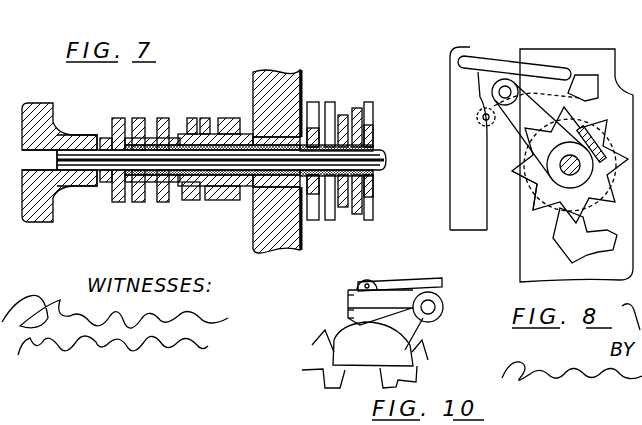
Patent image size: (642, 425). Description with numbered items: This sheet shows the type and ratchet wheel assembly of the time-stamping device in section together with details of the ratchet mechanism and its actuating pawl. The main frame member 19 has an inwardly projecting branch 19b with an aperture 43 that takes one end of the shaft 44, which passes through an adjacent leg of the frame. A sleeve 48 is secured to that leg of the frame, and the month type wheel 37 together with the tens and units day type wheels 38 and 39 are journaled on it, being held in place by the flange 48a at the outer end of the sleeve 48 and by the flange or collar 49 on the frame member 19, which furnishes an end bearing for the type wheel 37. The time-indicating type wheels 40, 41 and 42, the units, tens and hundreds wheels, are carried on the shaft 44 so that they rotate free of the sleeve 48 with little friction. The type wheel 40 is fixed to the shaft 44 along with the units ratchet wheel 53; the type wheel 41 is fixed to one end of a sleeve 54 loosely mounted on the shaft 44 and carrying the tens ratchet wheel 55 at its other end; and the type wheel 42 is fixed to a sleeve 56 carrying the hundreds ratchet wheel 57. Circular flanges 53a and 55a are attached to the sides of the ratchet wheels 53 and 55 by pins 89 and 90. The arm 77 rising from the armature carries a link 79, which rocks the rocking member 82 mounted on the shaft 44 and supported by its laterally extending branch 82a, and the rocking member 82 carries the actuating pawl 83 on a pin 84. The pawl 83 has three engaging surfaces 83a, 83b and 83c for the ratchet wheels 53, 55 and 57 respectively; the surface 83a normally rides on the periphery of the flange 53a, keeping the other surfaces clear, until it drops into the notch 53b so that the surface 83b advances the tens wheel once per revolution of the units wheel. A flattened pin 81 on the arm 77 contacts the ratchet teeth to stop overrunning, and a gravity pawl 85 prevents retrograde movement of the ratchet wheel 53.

In FIG. 7, the frame member 19 is at (44, 110).
In FIG. 8, the frame member 19 is at (576, 165).
In FIG. 7, the inwardly projecting branch 19b is at (78, 145).
In FIG. 7, the type wheel 37 is at (232, 118).
In FIG. 7, the type wheel 38 is at (204, 118).
In FIG. 7, the type wheel 39 is at (193, 118).
In FIG. 7, the type wheel 40 is at (118, 118).
In FIG. 7, the type wheel 41 is at (140, 118).
In FIG. 7, the type wheel 42 is at (163, 118).
In FIG. 7, the aperture 43 is at (28, 164).
In FIG. 7, the shaft 44 is at (80, 163).
In FIG. 8, the shaft 44 is at (562, 167).
In FIG. 7, the sleeve 48 is at (262, 250).
In FIG. 7, the flange 48a is at (186, 204).
In FIG. 7, the flange or collar 49 is at (243, 202).
In FIG. 7, the ratchet wheel 53 is at (373, 130).
In FIG. 8, the ratchet wheel 53 is at (537, 203).
In FIG. 10, the ratchet wheel 53 is at (332, 387).
In FIG. 7, the flange 53a is at (361, 108).
In FIG. 8, the flange 53a is at (540, 201).
In FIG. 10, the flange 53a is at (373, 344).
In FIG. 10, the notch 53b is at (322, 330).
In FIG. 7, the sleeve 54 is at (133, 204).
In FIG. 7, the ratchet wheel 55 is at (330, 102).
In FIG. 7, the flange 55a is at (343, 115).
In FIG. 7, the sleeve 56 is at (171, 204).
In FIG. 7, the ratchet wheel 57 is at (312, 102).
In FIG. 8, the arm 77 is at (468, 138).
In FIG. 8, the link 79 is at (490, 64).
In FIG. 10, the link 79 is at (428, 283).
In FIG. 8, the pin 81 is at (482, 120).
In FIG. 8, the rocking member 82 is at (535, 100).
In FIG. 8, the laterally extending branch 82a is at (582, 140).
In FIG. 8, the actuating pawl 83 is at (584, 80).
In FIG. 10, the actuating pawl 83 is at (387, 298).
In FIG. 10, the engaging surface 83a is at (352, 318).
In FIG. 10, the engaging surface 83b is at (352, 310).
In FIG. 10, the engaging surface 83c is at (350, 295).
In FIG. 8, the pin 84 is at (507, 86).
In FIG. 10, the pin 84 is at (437, 305).
In FIG. 8, the gravity pawl 85 is at (580, 247).
In FIG. 7, the pin 89 is at (373, 190).
In FIG. 7, the pin 90 is at (342, 218).